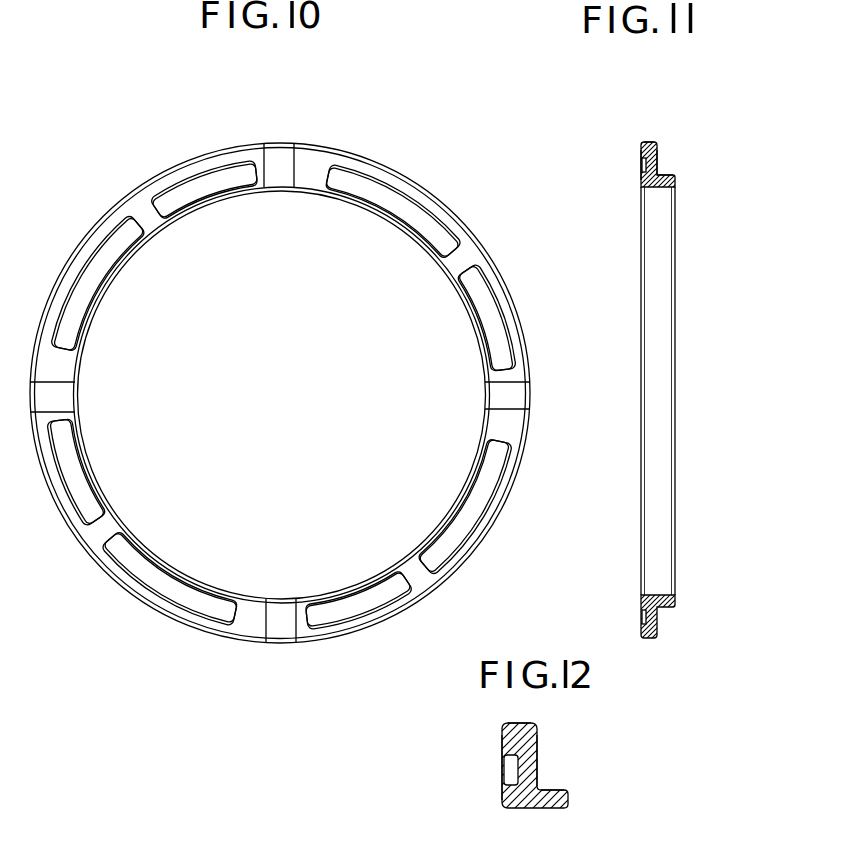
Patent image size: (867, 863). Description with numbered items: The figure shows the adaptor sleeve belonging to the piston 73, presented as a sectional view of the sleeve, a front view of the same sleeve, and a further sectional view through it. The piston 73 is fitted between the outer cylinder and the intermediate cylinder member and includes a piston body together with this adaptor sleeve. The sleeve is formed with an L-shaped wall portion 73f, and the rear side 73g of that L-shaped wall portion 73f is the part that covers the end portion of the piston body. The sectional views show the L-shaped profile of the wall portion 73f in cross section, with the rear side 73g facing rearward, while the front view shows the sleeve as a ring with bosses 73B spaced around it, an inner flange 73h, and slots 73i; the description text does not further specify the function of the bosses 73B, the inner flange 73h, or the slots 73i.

In FIG. 10, the piston 73 is at (477, 243).
In FIG. 11, the piston 73 is at (640, 184).
In FIG. 12, the piston 73 is at (500, 800).
In FIG. 10, the boss 73B is at (280, 146).
In FIG. 11, the boss 73B is at (675, 189).
In FIG. 12, the boss 73B is at (545, 807).
In FIG. 10, the L-shaped wall portion 73f is at (282, 641).
In FIG. 11, the L-shaped wall portion 73f is at (649, 143).
In FIG. 12, the L-shaped wall portion 73f is at (523, 733).
In FIG. 11, the rear side 73g is at (657, 160).
In FIG. 12, the rear side 73g is at (540, 763).
In FIG. 10, the inner flange 73h is at (452, 260).
In FIG. 11, the inner flange 73h is at (642, 153).
In FIG. 12, the inner flange 73h is at (502, 739).
In FIG. 10, the slot 73i is at (387, 192).
In FIG. 11, the slot 73i is at (643, 167).
In FIG. 12, the slot 73i is at (503, 771).